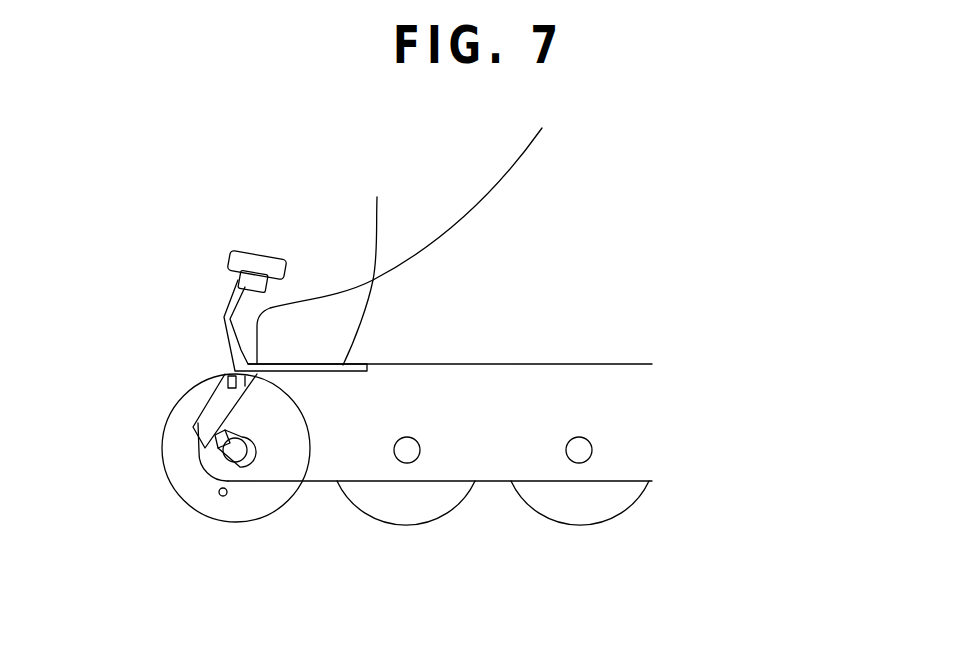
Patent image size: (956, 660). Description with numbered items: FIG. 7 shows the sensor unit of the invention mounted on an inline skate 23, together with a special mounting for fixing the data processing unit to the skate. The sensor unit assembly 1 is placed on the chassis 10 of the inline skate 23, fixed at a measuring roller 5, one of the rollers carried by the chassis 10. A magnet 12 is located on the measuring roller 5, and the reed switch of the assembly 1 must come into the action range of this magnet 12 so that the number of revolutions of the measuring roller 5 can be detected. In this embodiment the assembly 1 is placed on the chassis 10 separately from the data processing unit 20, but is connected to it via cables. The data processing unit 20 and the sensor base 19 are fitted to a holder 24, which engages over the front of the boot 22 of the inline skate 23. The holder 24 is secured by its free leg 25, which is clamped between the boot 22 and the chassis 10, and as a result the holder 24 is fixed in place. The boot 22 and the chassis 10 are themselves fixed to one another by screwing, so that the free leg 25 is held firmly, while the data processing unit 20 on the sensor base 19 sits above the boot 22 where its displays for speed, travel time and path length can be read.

The sensor unit assembly 1 is at (197, 420).
The measuring roller 5 is at (260, 522).
The chassis 10 is at (627, 455).
The magnet 12 is at (221, 495).
The sensor base 19 is at (240, 273).
The data processing unit 20 is at (254, 258).
The boot 22 is at (493, 193).
The inline skate 23 is at (688, 234).
The holder 24 is at (223, 328).
The free leg 25 is at (367, 260).